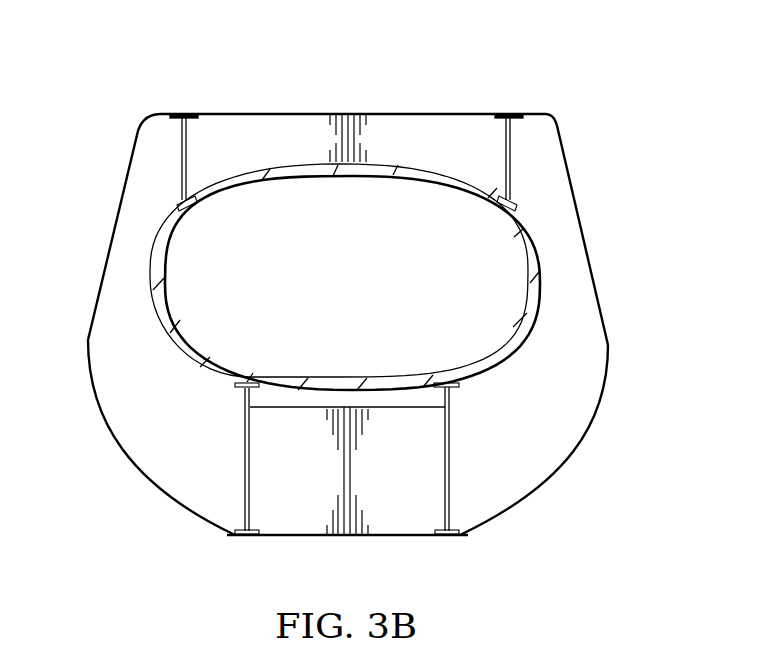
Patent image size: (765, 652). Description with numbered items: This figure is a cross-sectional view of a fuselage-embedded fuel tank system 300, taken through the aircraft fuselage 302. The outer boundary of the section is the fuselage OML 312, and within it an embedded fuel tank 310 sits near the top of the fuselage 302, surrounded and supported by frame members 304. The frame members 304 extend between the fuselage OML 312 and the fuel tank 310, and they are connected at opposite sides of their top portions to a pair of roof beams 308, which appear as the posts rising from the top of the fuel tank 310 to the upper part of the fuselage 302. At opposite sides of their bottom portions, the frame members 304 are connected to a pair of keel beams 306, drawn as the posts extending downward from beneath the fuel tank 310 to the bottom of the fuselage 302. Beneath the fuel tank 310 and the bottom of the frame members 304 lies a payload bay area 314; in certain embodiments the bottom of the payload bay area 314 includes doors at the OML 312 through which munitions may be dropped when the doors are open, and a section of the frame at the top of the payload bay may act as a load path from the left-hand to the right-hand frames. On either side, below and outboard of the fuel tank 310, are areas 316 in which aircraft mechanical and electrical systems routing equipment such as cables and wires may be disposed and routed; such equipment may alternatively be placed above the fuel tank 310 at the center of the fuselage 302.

The fuselage-embedded fuel tank system 300 is at (216, 76).
The aircraft fuselage 302 is at (606, 199).
The frame members 304 is at (100, 300).
The keel beams 306 is at (245, 515).
The roof beams 308 is at (180, 132).
The embedded fuel tank 310 is at (243, 187).
The fuselage OML 312 is at (128, 176).
The payload bay area 314 is at (385, 533).
The areas below and outboard the fuel tank 316 is at (163, 471).